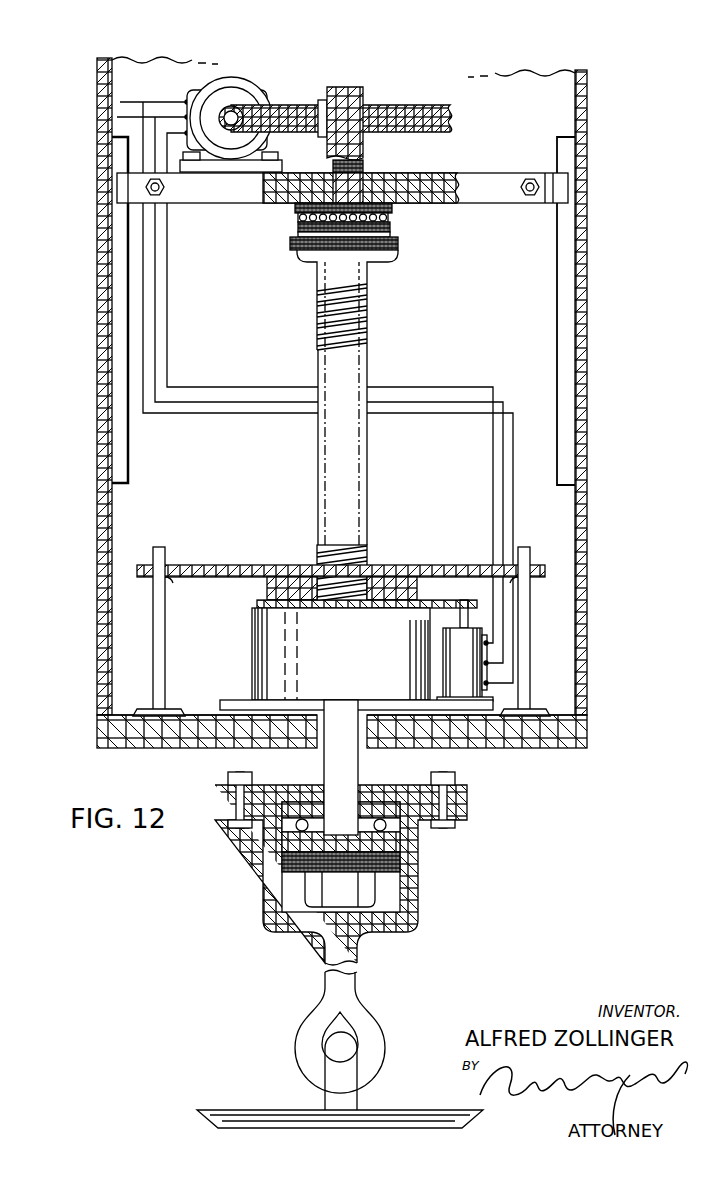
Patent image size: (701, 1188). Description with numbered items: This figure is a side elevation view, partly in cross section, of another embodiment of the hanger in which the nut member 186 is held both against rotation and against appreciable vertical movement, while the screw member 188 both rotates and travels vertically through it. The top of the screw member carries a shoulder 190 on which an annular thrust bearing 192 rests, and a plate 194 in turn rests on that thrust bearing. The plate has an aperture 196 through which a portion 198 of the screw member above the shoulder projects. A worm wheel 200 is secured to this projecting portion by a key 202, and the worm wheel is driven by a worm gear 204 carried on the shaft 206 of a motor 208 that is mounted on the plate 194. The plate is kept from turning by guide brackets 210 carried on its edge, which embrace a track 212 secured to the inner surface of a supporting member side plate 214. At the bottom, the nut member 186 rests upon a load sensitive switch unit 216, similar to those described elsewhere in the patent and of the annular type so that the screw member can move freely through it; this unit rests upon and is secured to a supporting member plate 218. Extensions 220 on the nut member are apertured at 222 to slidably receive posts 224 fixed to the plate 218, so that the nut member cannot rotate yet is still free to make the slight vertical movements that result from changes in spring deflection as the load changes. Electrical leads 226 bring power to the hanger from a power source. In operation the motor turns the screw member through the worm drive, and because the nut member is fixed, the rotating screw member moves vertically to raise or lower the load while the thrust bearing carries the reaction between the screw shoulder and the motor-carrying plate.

The nut member 186 is at (287, 573).
The screw member 188 is at (368, 325).
The shoulder 190 is at (386, 257).
The annular thrust bearing 192 is at (393, 227).
The plate 194 is at (447, 202).
The aperture 196 is at (367, 173).
The portion of the screw member 198 is at (347, 98).
The worm wheel 200 is at (320, 98).
The key 202 is at (327, 88).
The worm gear 204 is at (229, 134).
The shaft 206 is at (234, 108).
The motor 208 is at (223, 82).
The guide brackets 210 is at (530, 175).
The track 212 is at (557, 248).
The supporting member side plate 214 is at (580, 204).
The load sensitive switch unit 216 is at (237, 661).
The supporting member plate 218 is at (226, 748).
The extensions 220 is at (220, 551).
The apertures 222 is at (165, 578).
The posts 224 is at (160, 629).
The electrical leads 226 is at (450, 412).